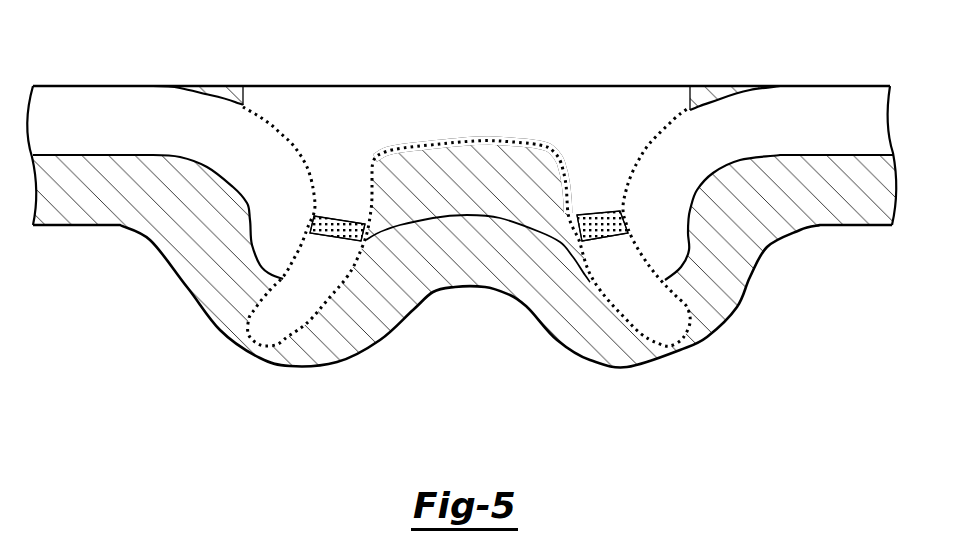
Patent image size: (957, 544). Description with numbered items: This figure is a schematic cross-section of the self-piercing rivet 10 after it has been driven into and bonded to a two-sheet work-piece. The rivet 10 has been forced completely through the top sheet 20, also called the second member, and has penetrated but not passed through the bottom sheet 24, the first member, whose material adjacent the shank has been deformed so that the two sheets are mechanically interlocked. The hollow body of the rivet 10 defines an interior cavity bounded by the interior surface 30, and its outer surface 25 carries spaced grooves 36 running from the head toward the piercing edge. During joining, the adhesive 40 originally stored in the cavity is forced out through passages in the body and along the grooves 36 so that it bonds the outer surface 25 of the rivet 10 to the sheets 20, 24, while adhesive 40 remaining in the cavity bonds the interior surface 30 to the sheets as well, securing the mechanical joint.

The rivet 10 is at (644, 84).
The top sheet 20 is at (835, 84).
The bottom sheet 24 is at (805, 230).
The outer surface 25 is at (239, 306).
The interior surface 30 is at (333, 313).
The grooves 36 is at (270, 291).
The adhesive 40 is at (282, 275).